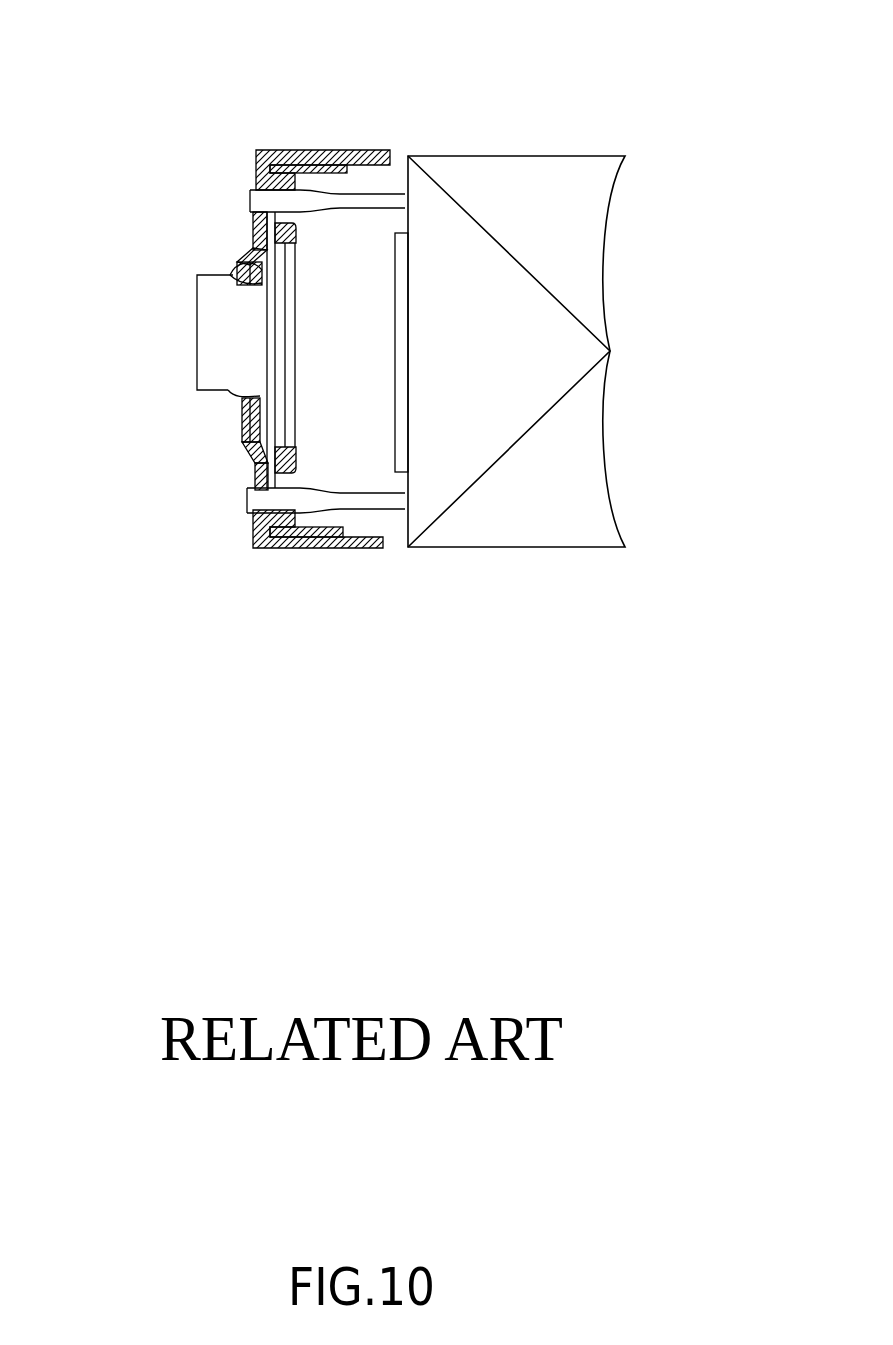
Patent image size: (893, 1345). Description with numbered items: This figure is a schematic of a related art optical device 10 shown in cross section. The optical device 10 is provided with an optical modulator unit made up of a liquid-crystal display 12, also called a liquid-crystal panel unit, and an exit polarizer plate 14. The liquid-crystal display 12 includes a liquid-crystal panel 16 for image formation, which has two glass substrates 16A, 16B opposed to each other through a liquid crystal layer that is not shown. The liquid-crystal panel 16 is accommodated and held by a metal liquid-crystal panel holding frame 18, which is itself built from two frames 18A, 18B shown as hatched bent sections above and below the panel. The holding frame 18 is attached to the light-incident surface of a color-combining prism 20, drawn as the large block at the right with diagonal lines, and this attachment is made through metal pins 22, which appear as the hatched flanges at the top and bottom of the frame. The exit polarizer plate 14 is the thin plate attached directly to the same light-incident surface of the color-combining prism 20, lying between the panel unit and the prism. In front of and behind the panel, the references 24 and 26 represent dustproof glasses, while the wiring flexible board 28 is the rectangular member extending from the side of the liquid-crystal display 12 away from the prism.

The optical device 10 is at (378, 100).
The liquid-crystal display 12 is at (235, 224).
The exit polarizer plate 14 is at (387, 490).
The liquid-crystal panel 16 is at (90, 243).
The glass substrate 16A is at (237, 246).
The glass substrate 16B is at (235, 276).
The liquid-crystal panel holding frame 18 is at (110, 450).
The frame 18A is at (247, 457).
The frame 18B is at (233, 435).
The color-combining prism 20 is at (552, 530).
The metal pin 22 is at (332, 192).
The dustproof glass 24 is at (283, 330).
The dustproof glass 26 is at (233, 408).
The wiring flexible board 28 is at (207, 318).